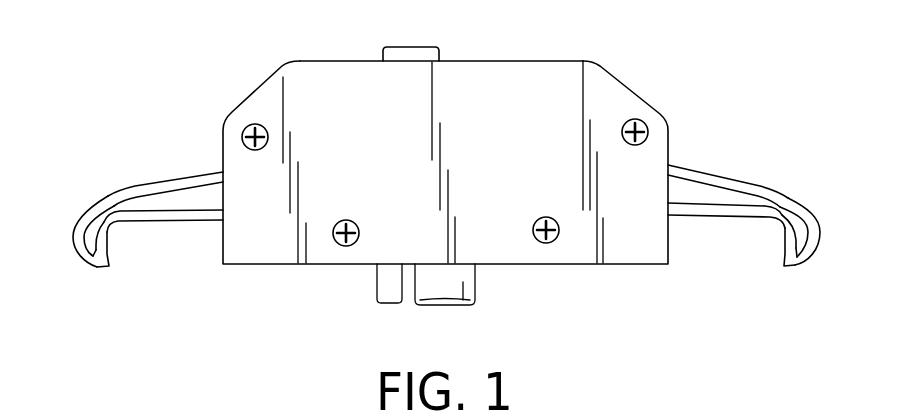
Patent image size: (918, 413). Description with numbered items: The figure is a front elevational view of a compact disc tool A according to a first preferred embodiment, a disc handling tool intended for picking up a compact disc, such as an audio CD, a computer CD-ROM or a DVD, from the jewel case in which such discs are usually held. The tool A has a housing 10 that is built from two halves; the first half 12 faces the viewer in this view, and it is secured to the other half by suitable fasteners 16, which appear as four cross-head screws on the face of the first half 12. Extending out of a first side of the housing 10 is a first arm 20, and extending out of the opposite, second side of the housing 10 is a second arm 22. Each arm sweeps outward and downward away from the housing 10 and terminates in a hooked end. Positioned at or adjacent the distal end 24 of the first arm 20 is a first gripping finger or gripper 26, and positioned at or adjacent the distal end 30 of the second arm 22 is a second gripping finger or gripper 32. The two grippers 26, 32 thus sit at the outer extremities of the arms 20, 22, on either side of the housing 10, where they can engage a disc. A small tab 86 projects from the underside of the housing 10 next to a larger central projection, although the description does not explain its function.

The compact disc tool A is at (548, 61).
The housing 10 is at (627, 233).
The first half 12 is at (263, 232).
The fasteners 16 is at (543, 244).
The first arm 20 is at (710, 200).
The second arm 22 is at (192, 202).
The distal end 24 is at (798, 215).
The first gripping finger 26 is at (793, 253).
The distal end 30 is at (92, 226).
The second gripping finger 32 is at (99, 265).
The mounting tab 86 is at (387, 290).